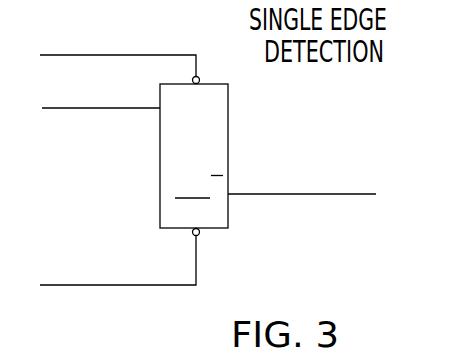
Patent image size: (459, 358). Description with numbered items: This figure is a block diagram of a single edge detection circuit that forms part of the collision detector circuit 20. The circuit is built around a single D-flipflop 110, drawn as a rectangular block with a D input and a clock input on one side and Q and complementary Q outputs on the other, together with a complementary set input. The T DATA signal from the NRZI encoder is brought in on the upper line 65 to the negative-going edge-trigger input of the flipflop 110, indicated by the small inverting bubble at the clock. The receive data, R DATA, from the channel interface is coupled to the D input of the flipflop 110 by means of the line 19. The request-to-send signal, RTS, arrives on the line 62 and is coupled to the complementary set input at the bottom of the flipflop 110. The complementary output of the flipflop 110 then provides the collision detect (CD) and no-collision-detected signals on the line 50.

The collision detector circuit 20 is at (265, 156).
The D-flipflop 110 is at (268, 92).
The T DATA line 65 is at (139, 57).
The line 19 is at (99, 110).
The line 50 is at (325, 196).
The line 62 is at (138, 287).